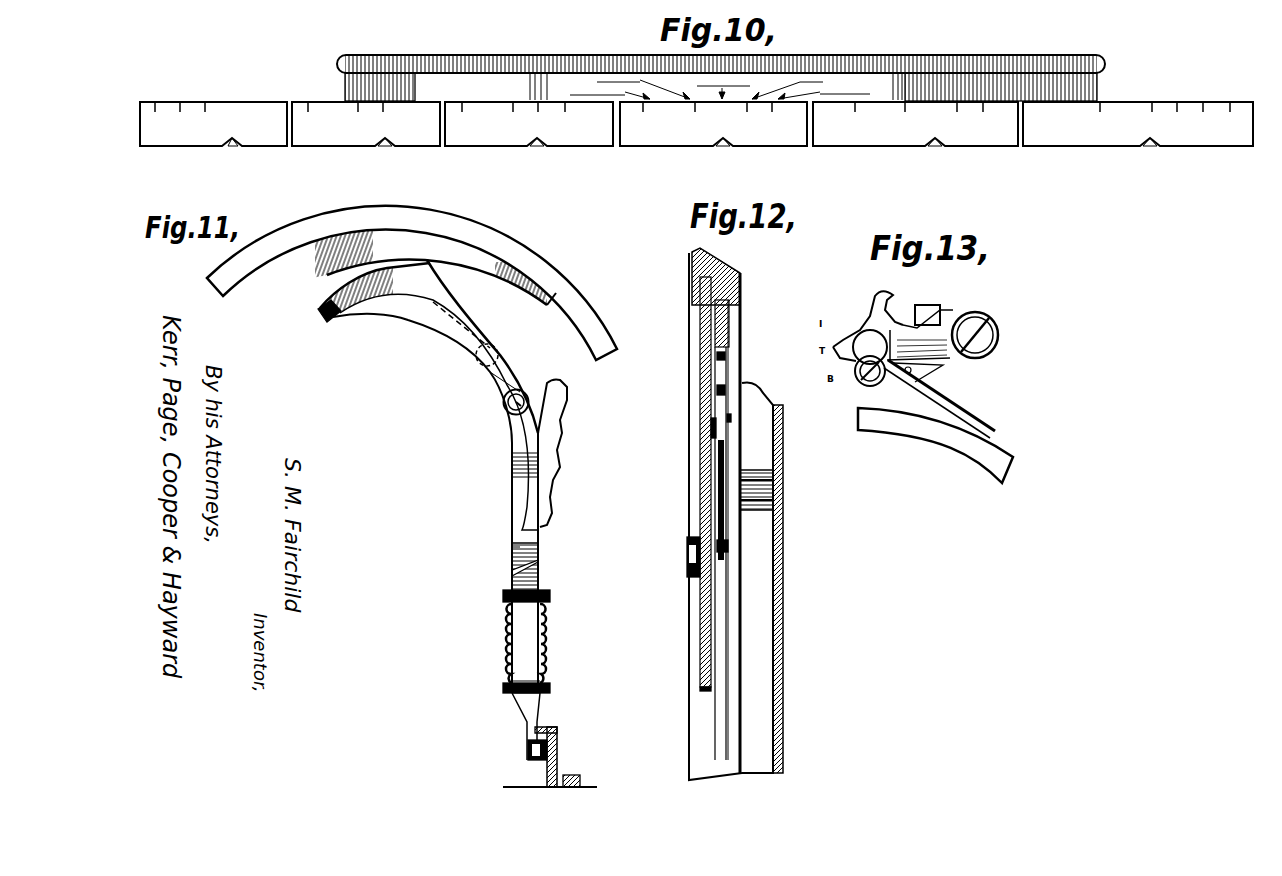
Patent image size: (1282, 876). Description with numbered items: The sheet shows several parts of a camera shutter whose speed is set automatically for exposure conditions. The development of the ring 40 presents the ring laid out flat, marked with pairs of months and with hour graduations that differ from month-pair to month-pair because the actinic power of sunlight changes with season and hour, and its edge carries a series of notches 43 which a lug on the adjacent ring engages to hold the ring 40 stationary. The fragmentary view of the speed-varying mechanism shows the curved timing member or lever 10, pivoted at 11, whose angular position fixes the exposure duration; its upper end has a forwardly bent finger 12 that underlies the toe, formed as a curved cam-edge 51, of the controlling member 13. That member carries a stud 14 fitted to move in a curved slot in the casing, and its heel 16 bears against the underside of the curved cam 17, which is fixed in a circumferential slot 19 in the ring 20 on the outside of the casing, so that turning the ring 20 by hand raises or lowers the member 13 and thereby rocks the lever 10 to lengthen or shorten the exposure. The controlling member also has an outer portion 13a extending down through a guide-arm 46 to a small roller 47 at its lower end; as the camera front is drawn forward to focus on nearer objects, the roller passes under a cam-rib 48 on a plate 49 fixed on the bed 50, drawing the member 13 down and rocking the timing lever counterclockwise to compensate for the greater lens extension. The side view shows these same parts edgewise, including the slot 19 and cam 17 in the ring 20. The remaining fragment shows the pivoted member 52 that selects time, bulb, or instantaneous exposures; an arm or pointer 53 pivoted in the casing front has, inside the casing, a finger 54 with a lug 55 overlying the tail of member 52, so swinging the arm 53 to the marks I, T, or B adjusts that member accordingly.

In FIG. 11, the curved timing member or lever 10 is at (408, 320).
In FIG. 12, the curved timing member or lever 10 is at (728, 548).
In FIG. 11, the pivot 11 is at (473, 362).
In FIG. 12, the pivot 11 is at (767, 468).
In FIG. 11, the forwardly bent finger 12 is at (335, 320).
In FIG. 12, the forwardly bent finger 12 is at (712, 423).
In FIG. 11, the controlling member 13 is at (337, 305).
In FIG. 12, the controlling member 13 is at (722, 513).
In FIG. 11, the outer portion of controlling member 13a is at (513, 543).
In FIG. 12, the outer portion of controlling member 13a is at (700, 638).
In FIG. 11, the stud 14 is at (520, 407).
In FIG. 12, the stud 14 is at (690, 577).
In FIG. 11, the heel 16 is at (430, 268).
In FIG. 12, the heel 16 is at (723, 368).
In FIG. 11, the curved cam 17 is at (393, 235).
In FIG. 12, the curved cam 17 is at (728, 322).
In FIG. 12, the circumferential slot 19 is at (755, 262).
In FIG. 11, the ring 20 is at (507, 237).
In FIG. 12, the ring 20 is at (700, 248).
In FIG. 10, the ring 40 is at (652, 145).
In FIG. 10, the notches 43 is at (1140, 160).
In FIG. 11, the guide-arm 46 is at (550, 593).
In FIG. 11, the roller 47 is at (540, 760).
In FIG. 11, the cam-rib 48 is at (537, 723).
In FIG. 11, the plate 49 is at (557, 743).
In FIG. 13, the bed 50 is at (933, 392).
In FIG. 11, the curved cam-edge 51 is at (375, 295).
In FIG. 13, the pivoted member 52 is at (943, 365).
In FIG. 13, the arm or pointer 53 is at (848, 335).
In FIG. 13, the finger 54 is at (955, 298).
In FIG. 13, the lug 55 is at (927, 305).